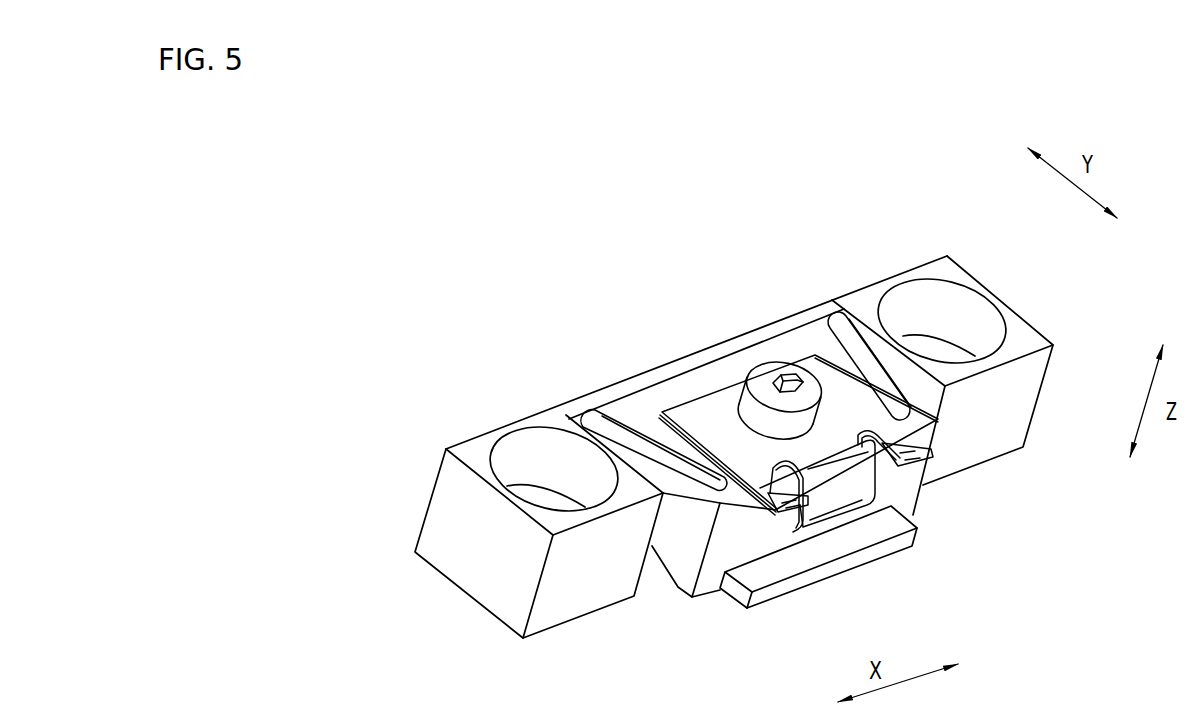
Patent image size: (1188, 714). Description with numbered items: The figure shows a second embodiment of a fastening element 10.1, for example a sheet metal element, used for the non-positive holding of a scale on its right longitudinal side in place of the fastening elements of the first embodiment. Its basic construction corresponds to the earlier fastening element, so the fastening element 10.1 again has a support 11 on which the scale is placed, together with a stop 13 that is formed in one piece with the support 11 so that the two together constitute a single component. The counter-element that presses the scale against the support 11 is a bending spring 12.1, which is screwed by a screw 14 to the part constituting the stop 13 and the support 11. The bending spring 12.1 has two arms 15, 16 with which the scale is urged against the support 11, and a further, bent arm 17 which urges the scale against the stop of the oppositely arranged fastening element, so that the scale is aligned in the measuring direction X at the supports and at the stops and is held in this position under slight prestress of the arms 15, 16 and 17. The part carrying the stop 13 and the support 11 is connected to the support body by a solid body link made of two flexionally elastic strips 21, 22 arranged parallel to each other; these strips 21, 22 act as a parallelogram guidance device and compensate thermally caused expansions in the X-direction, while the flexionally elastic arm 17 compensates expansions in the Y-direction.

The fastening element 10.1 is at (971, 518).
The support 11 is at (873, 530).
The bending spring 12.1 is at (703, 412).
The stop 13 is at (728, 543).
The screw 14 is at (775, 370).
The arm 15 is at (775, 493).
The arm 16 is at (918, 439).
The bent arm 17 is at (830, 498).
The flexionally elastic strip 21 is at (614, 418).
The flexionally elastic strip 22 is at (862, 352).